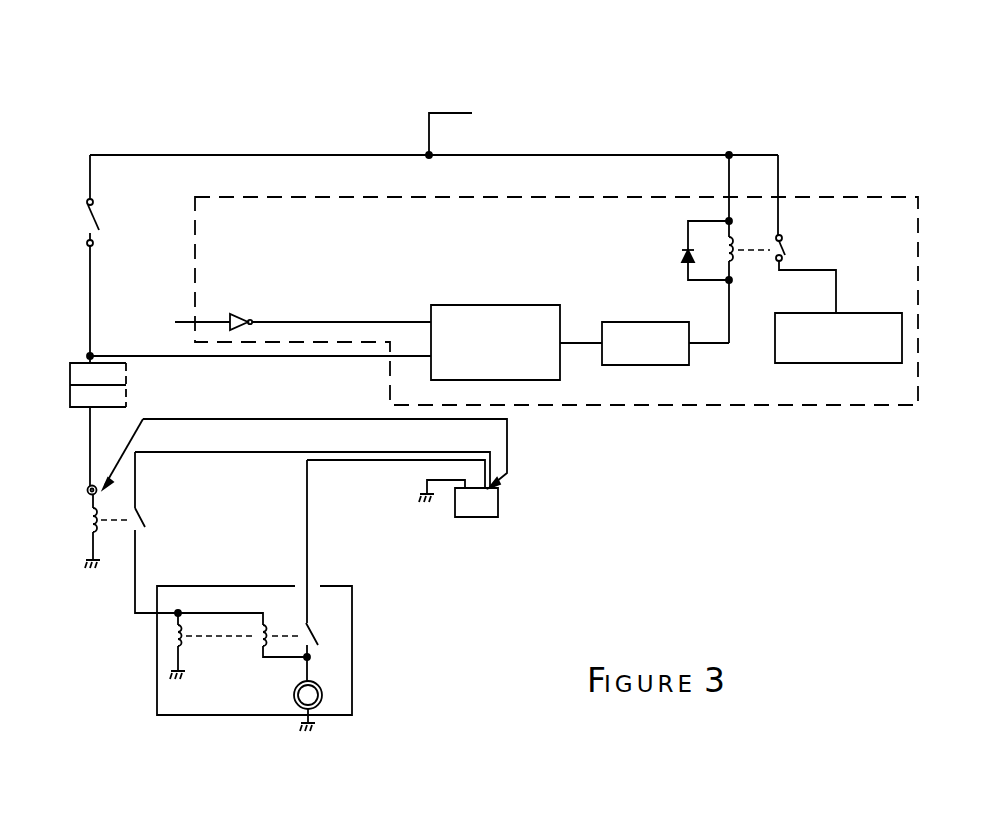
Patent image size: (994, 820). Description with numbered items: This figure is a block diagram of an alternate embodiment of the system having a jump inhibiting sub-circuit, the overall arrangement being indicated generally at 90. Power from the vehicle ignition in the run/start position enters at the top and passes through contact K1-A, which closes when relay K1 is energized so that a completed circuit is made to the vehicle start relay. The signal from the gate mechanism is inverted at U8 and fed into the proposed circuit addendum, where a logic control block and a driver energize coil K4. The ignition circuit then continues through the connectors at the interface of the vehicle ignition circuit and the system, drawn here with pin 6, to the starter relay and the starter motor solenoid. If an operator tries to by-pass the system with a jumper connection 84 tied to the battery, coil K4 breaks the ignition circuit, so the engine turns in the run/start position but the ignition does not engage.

The starter circuit with proposed circuit addendum 90 is at (432, 45).
The jumper connection 84 is at (242, 418).
The connector pin 6 of J2/P2 6 is at (98, 385).
The contact K1-A is at (120, 200).
The inverter U8 is at (239, 312).
The coil K4 is at (738, 254).